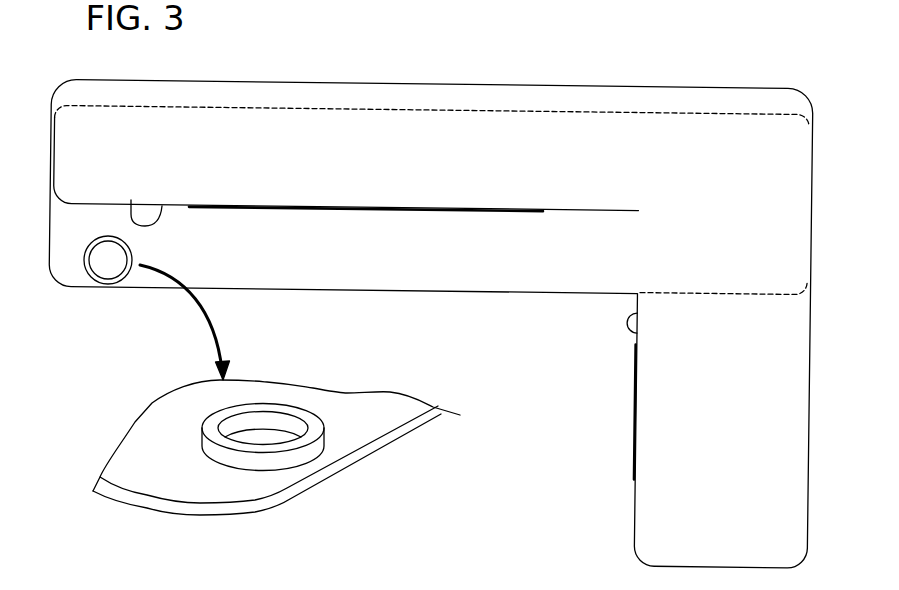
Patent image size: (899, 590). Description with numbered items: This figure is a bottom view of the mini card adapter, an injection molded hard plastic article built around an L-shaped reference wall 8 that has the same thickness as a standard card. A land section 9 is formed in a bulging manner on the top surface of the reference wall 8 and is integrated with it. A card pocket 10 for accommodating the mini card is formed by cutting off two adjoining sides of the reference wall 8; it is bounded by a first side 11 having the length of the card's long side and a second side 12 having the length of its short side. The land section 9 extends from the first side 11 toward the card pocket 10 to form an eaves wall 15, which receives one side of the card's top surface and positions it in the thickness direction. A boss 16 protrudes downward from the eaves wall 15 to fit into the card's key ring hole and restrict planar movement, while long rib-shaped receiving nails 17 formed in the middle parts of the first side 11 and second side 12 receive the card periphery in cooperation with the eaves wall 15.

The reference wall 8 is at (561, 127).
The land section 9 is at (452, 106).
The card pocket 10 is at (639, 271).
The first side 11 is at (131, 200).
The second side 12 is at (642, 316).
The eaves wall 15 is at (331, 281).
The boss 16 is at (87, 266).
The receiving nail 17 is at (359, 211).